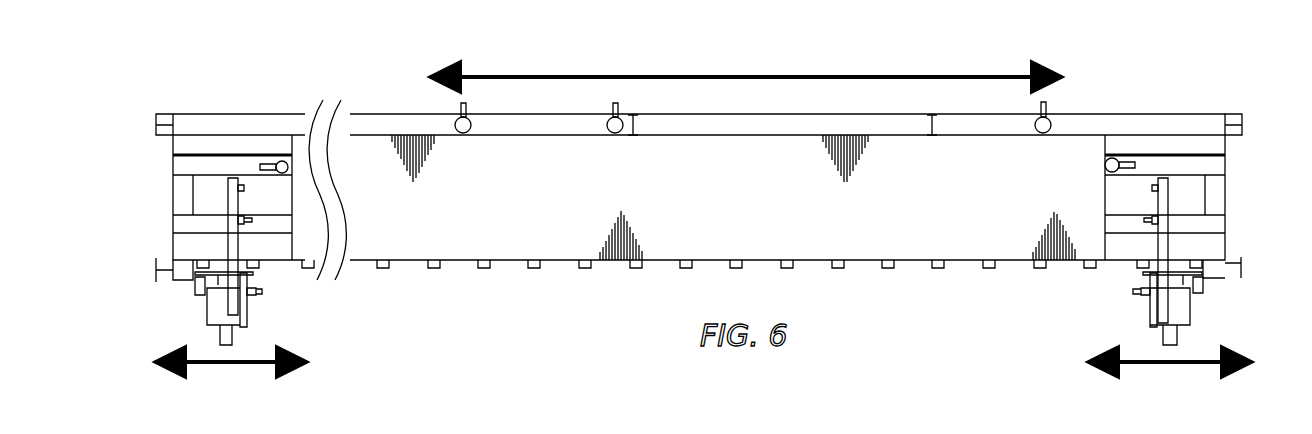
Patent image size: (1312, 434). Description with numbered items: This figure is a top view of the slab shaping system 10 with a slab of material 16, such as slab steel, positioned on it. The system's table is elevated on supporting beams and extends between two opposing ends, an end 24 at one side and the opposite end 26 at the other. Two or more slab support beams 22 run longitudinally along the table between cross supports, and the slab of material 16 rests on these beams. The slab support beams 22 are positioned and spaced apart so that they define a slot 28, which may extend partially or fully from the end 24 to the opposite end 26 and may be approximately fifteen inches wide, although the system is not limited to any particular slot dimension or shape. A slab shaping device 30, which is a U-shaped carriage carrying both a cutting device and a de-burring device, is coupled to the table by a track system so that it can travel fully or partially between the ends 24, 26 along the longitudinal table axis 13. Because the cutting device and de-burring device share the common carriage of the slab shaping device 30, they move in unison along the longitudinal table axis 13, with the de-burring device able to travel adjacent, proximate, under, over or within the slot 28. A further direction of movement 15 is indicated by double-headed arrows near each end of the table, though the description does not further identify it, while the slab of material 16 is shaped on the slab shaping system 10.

The slab shaping system 10 is at (745, 54).
The longitudinal table axis 13 is at (518, 74).
The transverse direction of travel 15 is at (281, 359).
The slab of material 16 is at (726, 207).
The slab support beams 22 is at (1215, 250).
The end of the table 24 is at (1230, 92).
The opposite end of the table 26 is at (223, 82).
The slot 28 is at (1185, 195).
The slab shaping device 30 is at (1137, 316).